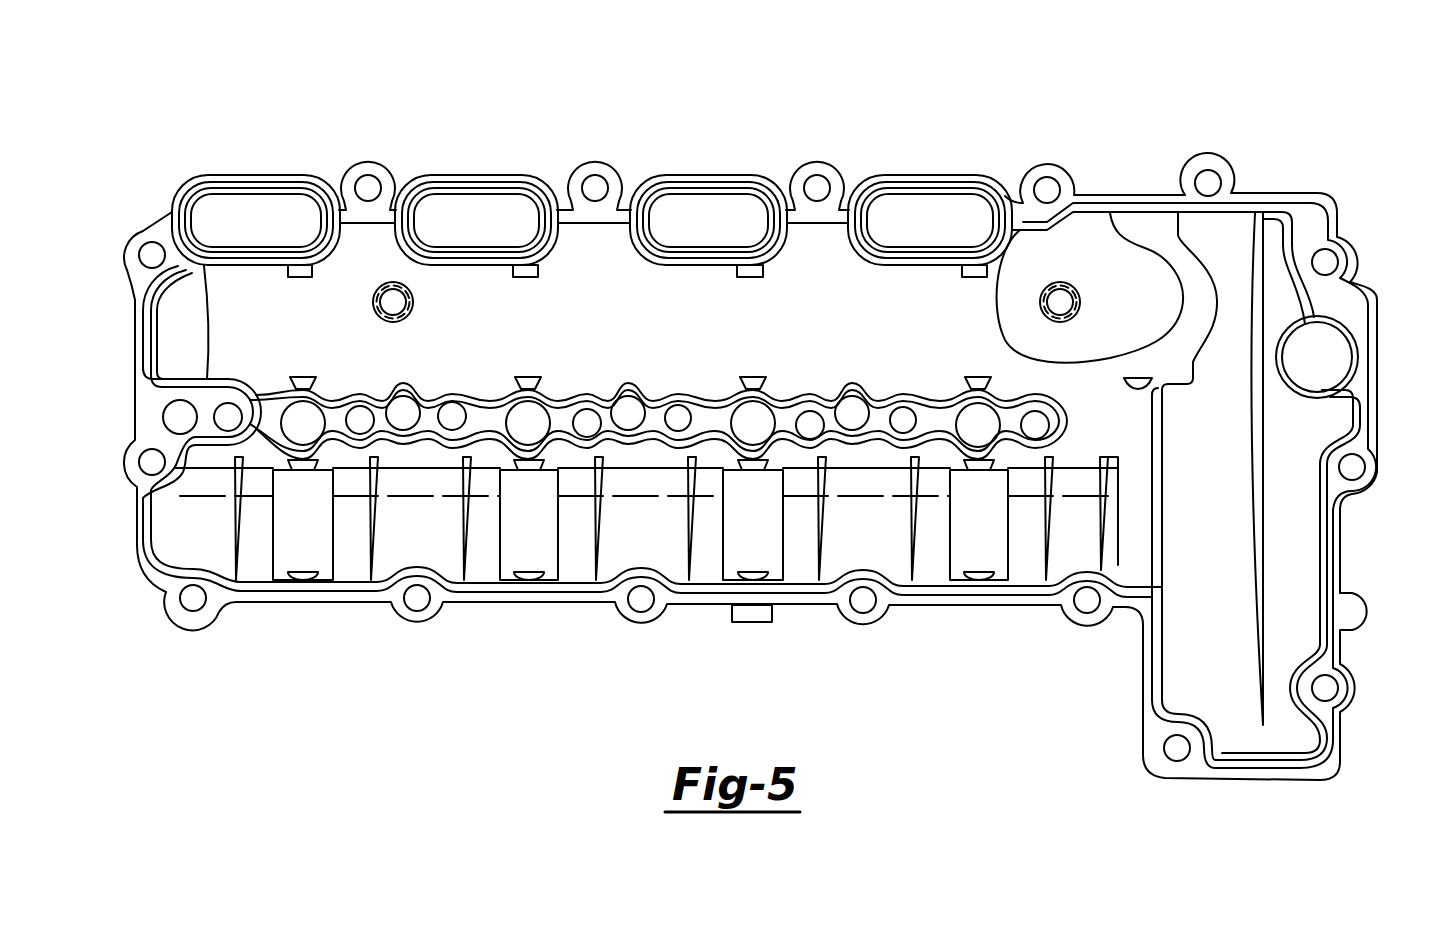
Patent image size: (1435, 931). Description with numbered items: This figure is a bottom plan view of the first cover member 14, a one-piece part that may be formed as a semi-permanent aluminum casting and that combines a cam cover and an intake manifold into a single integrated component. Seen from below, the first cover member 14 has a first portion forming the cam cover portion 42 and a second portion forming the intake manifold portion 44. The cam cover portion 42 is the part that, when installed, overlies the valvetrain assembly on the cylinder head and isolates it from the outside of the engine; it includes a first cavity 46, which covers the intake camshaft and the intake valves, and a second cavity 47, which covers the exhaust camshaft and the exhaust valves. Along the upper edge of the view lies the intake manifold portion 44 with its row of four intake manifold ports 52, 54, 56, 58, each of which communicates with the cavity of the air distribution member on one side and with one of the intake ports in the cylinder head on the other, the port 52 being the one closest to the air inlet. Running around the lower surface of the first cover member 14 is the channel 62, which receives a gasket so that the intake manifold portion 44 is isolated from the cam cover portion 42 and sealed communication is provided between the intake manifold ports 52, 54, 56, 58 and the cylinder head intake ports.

The first cover member 14 is at (577, 103).
The cam cover portion 42 is at (1122, 275).
The intake manifold portion 44 is at (198, 182).
The first cavity 46 is at (178, 340).
The second cavity 47 is at (193, 538).
The intake manifold port 52 is at (935, 222).
The intake manifold port 54 is at (710, 222).
The intake manifold port 56 is at (485, 220).
The intake manifold port 58 is at (258, 220).
The channel 62 is at (1327, 572).